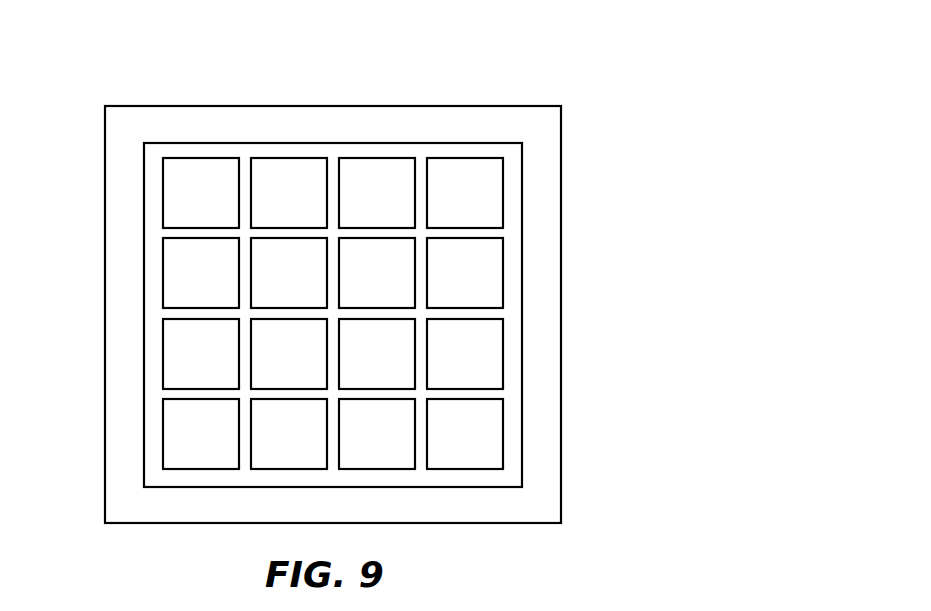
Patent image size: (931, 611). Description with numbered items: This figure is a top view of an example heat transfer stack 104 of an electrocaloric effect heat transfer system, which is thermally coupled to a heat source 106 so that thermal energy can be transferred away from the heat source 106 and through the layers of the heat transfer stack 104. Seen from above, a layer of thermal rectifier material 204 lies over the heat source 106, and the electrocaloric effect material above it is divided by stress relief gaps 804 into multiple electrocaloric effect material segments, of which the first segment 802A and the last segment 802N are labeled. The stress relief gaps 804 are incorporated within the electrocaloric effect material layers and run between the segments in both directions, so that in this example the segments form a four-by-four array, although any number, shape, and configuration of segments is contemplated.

The heat transfer stack 104 is at (626, 125).
The heat source 106 is at (122, 500).
The thermal rectifier material 204 is at (153, 393).
The electrocaloric effect material segment 802A is at (175, 185).
The electrocaloric effect material segment 802N is at (492, 446).
The stress relief gaps 804 is at (330, 176).